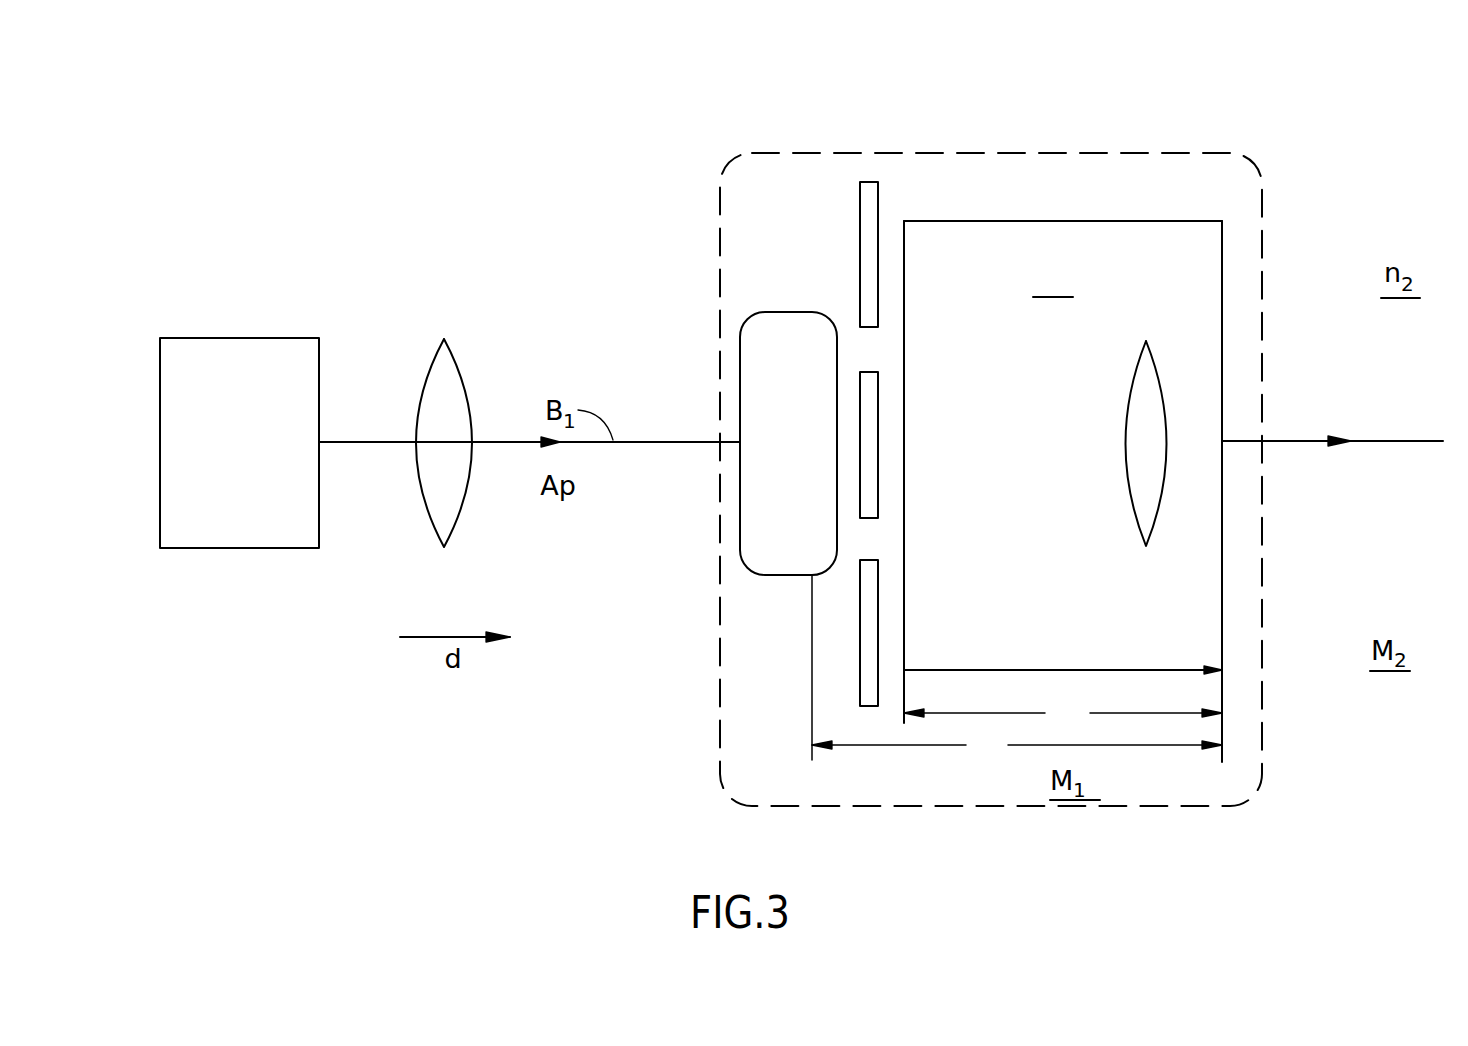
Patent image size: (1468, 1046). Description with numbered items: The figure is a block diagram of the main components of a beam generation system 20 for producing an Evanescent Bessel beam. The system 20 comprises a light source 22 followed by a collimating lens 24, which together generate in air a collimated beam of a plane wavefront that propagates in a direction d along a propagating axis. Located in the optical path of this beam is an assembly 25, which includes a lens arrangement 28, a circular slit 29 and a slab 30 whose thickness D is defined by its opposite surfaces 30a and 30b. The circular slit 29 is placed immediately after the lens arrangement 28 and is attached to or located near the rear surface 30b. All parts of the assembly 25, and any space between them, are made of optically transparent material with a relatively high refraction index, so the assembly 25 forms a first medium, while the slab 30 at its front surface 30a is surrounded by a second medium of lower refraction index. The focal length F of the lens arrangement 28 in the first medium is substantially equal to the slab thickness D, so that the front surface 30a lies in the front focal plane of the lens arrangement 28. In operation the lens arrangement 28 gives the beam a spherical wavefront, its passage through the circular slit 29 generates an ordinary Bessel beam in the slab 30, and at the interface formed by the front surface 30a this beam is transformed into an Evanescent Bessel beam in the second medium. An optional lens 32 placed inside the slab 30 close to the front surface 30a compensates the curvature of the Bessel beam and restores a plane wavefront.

The system 20 is at (401, 138).
The light source 22 is at (228, 338).
The collimating lens 24 is at (430, 360).
The assembly 25 is at (1138, 145).
The lens arrangement 28 is at (740, 372).
The circular slit 29 is at (862, 215).
The slab 30 is at (1185, 622).
The front surface 30a is at (1222, 268).
The rear surface 30b is at (904, 653).
The lens 32 is at (1146, 410).